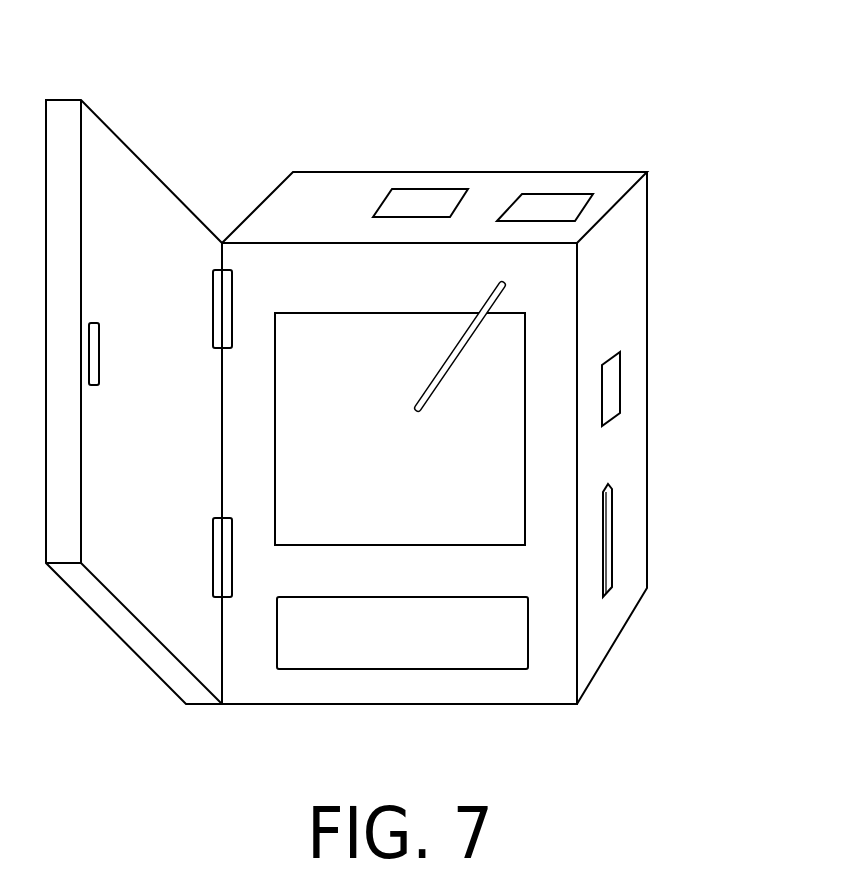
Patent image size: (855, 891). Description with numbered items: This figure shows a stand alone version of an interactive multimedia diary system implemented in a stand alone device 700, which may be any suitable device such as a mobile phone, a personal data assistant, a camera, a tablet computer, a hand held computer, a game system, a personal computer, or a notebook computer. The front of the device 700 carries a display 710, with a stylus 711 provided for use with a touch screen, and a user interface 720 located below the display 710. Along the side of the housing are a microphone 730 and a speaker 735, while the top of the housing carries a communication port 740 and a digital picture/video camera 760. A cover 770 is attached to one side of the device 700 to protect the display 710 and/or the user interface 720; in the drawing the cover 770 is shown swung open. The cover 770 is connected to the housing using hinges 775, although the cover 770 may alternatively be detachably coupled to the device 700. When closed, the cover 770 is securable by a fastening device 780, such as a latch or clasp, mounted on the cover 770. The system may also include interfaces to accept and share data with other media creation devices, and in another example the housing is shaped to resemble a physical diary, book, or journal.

The stand alone device 700 is at (445, 113).
The display 710 is at (375, 422).
The stylus 711 is at (490, 294).
The user interface 720 is at (417, 652).
The microphone 730 is at (617, 352).
The speaker 735 is at (604, 522).
The communication port 740 is at (443, 214).
The digital picture/video camera 760 is at (568, 218).
The cover 770 is at (170, 456).
The hinges 775 is at (213, 298).
The fastening device 780 is at (99, 371).